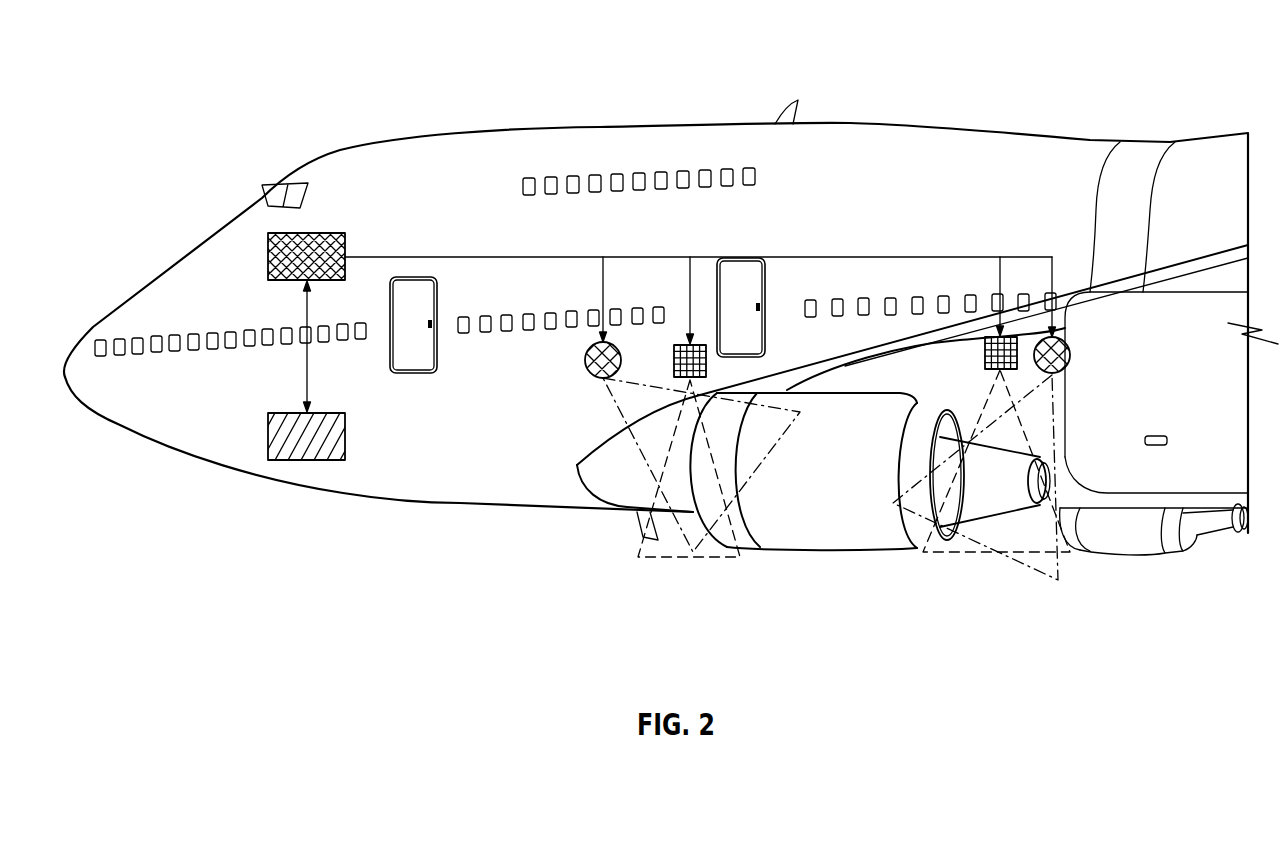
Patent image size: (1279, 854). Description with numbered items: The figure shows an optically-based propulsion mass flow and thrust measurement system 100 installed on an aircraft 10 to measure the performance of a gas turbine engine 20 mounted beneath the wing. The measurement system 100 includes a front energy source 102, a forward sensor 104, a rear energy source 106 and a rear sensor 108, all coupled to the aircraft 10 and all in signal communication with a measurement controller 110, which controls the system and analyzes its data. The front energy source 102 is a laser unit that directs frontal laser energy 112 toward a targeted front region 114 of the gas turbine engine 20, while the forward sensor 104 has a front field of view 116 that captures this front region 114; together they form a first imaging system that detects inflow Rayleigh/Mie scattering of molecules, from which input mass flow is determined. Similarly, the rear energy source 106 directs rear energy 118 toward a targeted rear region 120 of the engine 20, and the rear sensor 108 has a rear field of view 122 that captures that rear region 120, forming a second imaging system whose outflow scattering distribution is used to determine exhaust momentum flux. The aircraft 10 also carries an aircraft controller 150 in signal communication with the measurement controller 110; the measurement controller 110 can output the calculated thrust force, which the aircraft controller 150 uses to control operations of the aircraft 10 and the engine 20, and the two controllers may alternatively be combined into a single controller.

The aircraft 10 is at (326, 96).
The optically-based propulsion mass flow and thrust measurement system 100 is at (712, 160).
The gas turbine engine 20 is at (836, 545).
The front energy source 102 is at (586, 357).
The forward sensor 104 is at (672, 365).
The rear energy source 106 is at (1070, 357).
The rear sensor 108 is at (985, 352).
The measurement controller 110 is at (268, 257).
The frontal laser energy 112 is at (640, 450).
The targeted front region 114 is at (683, 500).
The front field of view 116 is at (638, 557).
The rear energy 118 is at (1020, 560).
The targeted rear region 120 is at (1004, 492).
The rear field of view 122 is at (1070, 552).
The aircraft controller 150 is at (268, 437).